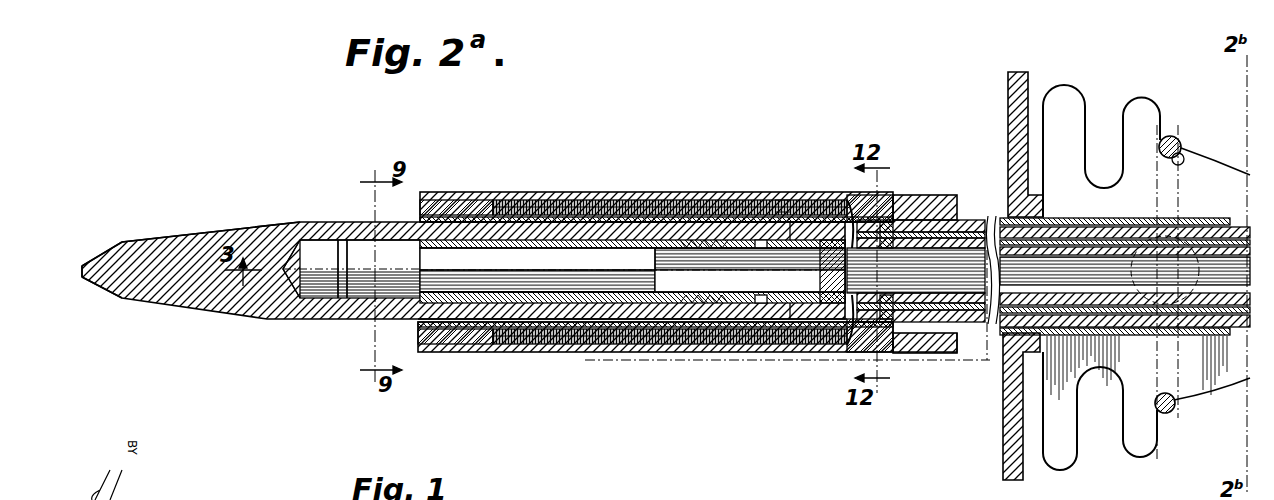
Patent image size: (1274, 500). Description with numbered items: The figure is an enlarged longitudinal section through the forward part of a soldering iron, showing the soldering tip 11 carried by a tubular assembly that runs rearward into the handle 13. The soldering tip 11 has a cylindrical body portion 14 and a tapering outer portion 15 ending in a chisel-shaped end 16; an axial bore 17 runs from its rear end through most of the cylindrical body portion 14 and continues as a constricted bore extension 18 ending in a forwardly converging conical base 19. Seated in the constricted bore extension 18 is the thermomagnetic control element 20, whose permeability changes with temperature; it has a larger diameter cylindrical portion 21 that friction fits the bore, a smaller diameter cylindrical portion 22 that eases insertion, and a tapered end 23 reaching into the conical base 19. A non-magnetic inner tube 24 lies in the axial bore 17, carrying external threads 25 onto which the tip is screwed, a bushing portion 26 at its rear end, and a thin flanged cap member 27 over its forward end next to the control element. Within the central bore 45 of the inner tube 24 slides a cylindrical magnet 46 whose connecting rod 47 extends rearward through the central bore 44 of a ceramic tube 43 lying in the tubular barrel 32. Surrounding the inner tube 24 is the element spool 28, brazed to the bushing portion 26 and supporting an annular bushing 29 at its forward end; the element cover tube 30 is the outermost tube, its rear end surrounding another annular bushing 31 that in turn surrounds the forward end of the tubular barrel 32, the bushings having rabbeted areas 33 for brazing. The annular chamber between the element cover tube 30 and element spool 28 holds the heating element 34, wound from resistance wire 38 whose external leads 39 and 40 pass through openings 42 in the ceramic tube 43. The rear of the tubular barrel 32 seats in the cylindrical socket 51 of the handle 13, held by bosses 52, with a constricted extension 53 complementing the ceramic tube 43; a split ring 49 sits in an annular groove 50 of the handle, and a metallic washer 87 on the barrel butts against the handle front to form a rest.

The soldering tip 11 is at (213, 238).
The handle 13 is at (1226, 380).
The cylindrical body portion 14 is at (400, 220).
The tapering outer portion 15 is at (165, 232).
The chisel-shaped end 16 is at (95, 262).
The axial bore 17 is at (604, 240).
The constricted bore extension 18 is at (328, 240).
The conical base 19 is at (265, 255).
The thermomagnetic control element 20 is at (351, 269).
The larger diameter cylindrical portion 21 is at (362, 288).
The smaller diameter cylindrical portion 22 is at (317, 288).
The tapered end 23 is at (285, 271).
The inner tube 24 is at (707, 271).
The external threads 25 is at (759, 271).
The bushing portion 26 is at (805, 330).
The cap member 27 is at (422, 250).
The element spool 28 is at (536, 344).
The annular bushing 29 is at (465, 342).
The element cover tube 30 is at (490, 348).
The annular bushing 31 is at (948, 353).
The tubular barrel 32 is at (965, 222).
The rabbeted areas 33 is at (940, 200).
The heating element 34 is at (677, 348).
The resistance wire 38 is at (800, 200).
The external lead 39 is at (868, 210).
The external lead 40 is at (849, 342).
The openings 42 is at (1068, 217).
The ceramic tube 43 is at (886, 345).
The central bore 44 is at (990, 238).
The central bore 45 is at (790, 286).
The cylindrical magnet 46 is at (626, 272).
The connecting rod 47 is at (667, 285).
The split ring 49 is at (1173, 137).
The annular groove 50 is at (1185, 155).
The cylindrical socket 51 is at (1196, 224).
The bosses 52 is at (1136, 216).
The constricted extension 53 is at (1238, 220).
The metallic washer 87 is at (1003, 437).